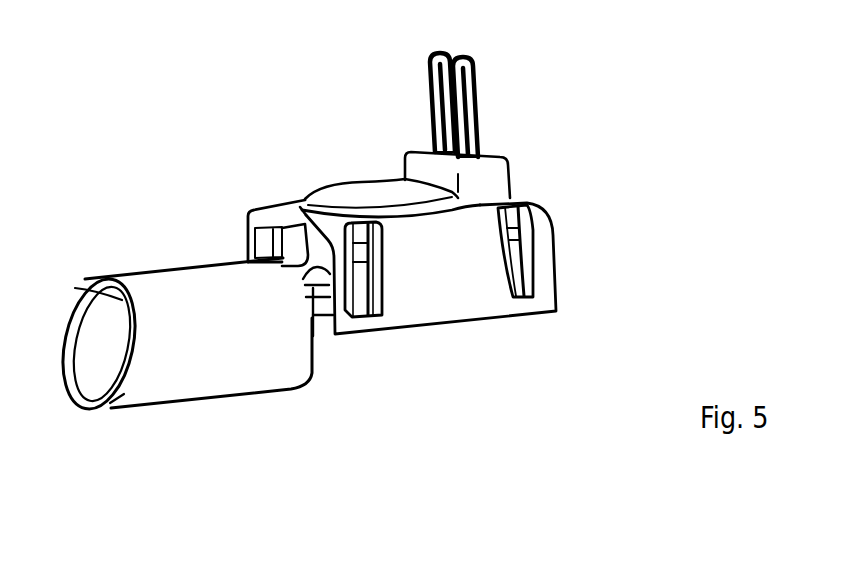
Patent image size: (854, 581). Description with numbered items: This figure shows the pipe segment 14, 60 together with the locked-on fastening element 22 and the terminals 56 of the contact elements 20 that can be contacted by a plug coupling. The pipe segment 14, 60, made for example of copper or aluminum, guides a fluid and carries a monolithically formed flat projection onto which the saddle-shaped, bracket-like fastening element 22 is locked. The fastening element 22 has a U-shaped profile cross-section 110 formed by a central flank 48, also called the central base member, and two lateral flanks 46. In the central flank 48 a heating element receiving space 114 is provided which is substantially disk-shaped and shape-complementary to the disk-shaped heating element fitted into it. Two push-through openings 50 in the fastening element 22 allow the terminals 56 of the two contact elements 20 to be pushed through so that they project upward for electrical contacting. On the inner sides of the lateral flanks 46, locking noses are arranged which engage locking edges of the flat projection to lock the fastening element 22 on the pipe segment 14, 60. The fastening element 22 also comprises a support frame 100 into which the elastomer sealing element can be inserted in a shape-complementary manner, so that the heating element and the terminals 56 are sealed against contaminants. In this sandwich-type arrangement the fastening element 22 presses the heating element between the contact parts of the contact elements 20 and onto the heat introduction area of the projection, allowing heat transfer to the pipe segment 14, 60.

The pipe segment 14 is at (182, 297).
The pipe segment 60 is at (143, 270).
The fastening element 22 is at (556, 241).
The heating element receiving space 114 is at (372, 192).
The push-through openings 50 is at (433, 150).
The contact elements 20 is at (454, 81).
The terminals 56 is at (432, 88).
The lateral flanks 46 is at (247, 243).
The central flank 48 is at (292, 233).
The U-shaped profile cross-section 110 is at (271, 262).
The support frame 100 is at (302, 254).